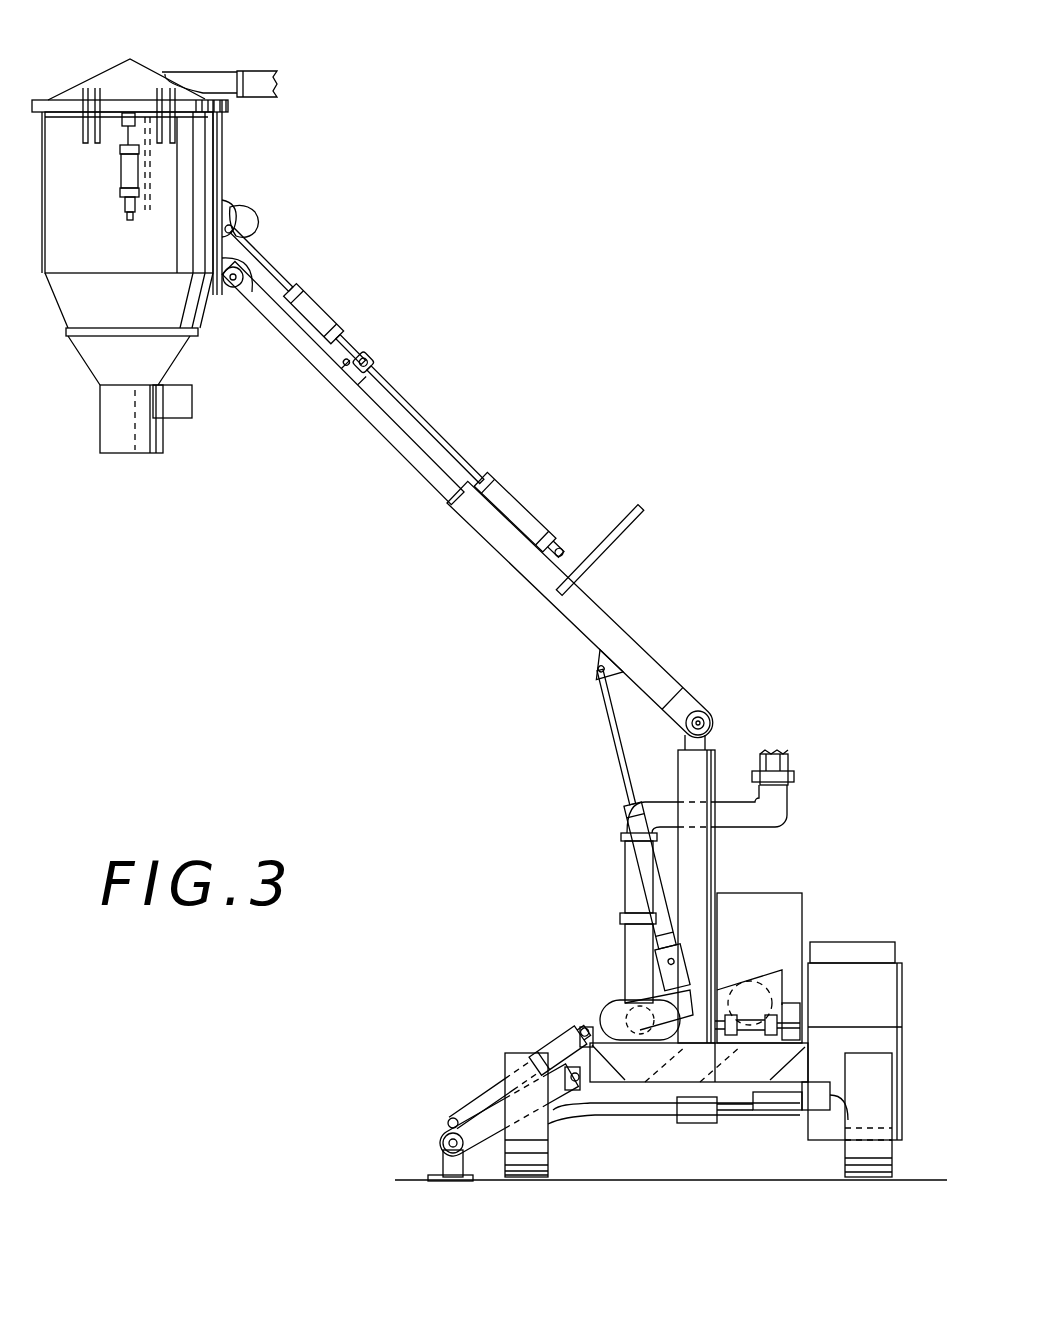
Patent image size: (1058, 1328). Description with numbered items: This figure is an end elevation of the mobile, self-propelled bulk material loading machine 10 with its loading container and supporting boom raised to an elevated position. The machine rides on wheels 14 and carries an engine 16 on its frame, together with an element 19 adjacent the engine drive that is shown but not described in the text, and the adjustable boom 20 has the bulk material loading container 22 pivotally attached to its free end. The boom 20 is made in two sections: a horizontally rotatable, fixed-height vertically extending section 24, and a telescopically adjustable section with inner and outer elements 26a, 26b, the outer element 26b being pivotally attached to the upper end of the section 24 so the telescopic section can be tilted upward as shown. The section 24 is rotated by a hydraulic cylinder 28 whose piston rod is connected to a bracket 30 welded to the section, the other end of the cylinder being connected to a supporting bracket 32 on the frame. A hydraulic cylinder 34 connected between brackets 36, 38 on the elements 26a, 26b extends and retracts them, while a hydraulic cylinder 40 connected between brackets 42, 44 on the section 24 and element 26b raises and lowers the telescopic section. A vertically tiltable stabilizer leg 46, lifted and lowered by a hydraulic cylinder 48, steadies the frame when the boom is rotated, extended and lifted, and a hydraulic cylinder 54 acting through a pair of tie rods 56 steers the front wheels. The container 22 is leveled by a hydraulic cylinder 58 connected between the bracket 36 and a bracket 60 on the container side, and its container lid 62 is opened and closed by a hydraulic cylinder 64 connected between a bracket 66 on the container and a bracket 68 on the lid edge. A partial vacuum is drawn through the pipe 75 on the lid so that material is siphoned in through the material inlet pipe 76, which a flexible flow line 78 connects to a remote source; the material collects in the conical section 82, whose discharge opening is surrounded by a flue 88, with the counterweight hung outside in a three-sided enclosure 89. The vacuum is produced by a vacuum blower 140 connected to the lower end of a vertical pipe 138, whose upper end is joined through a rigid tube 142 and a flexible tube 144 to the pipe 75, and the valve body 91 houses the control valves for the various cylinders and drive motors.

The bulk material loading machine 10 is at (707, 653).
The wheels 14 is at (530, 1181).
The engine 16 is at (803, 899).
The motor 19 is at (727, 987).
The adjustable boom 20 is at (650, 701).
The bulk material loading container 22 is at (224, 141).
The vertically extending section 24 is at (714, 860).
The inner element 26a is at (362, 411).
The outer element 26b is at (507, 546).
The hydraulic cylinder 28 is at (750, 1038).
The bracket 30 is at (699, 1062).
The supporting bracket 32 is at (793, 1001).
The hydraulic cylinder 34 is at (514, 497).
The bracket 36 is at (366, 356).
The bracket 38 is at (571, 568).
The hydraulic cylinder 40 is at (620, 818).
The bracket 42 is at (656, 972).
The bracket 44 is at (592, 668).
The stabilizer leg 46 is at (458, 1168).
The hydraulic cylinder 48 is at (557, 1040).
The hydraulic cylinder 54 is at (780, 1108).
The tie rods 56 is at (645, 1124).
The hydraulic cylinder 58 is at (311, 300).
The bracket 60 is at (222, 229).
The container lid 62 is at (78, 88).
The hydraulic cylinder 64 is at (120, 178).
The bracket 66 is at (131, 220).
The bracket 68 is at (153, 113).
The pipe 75 is at (213, 76).
The material inlet pipe 76 is at (228, 204).
The flexible flow line 78 is at (254, 221).
The conical section 82 is at (178, 352).
The flue 88 is at (127, 447).
The three-sided enclosure 89 is at (192, 400).
The valve body 91 is at (890, 948).
The vertical pipe 138 is at (630, 890).
The vacuum blower 140 is at (612, 1008).
The rigid tube 142 is at (786, 813).
The flexible tube 144 is at (270, 73).